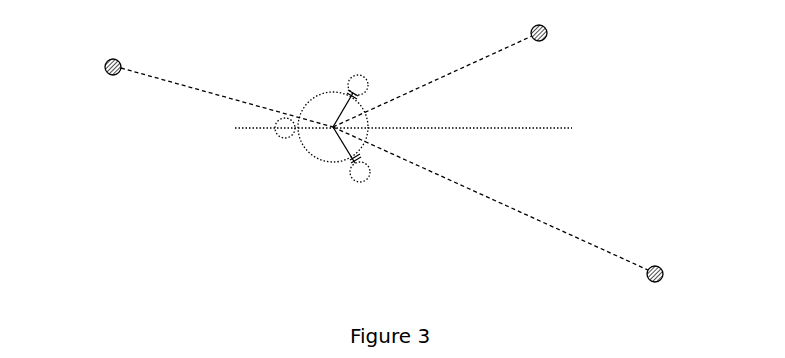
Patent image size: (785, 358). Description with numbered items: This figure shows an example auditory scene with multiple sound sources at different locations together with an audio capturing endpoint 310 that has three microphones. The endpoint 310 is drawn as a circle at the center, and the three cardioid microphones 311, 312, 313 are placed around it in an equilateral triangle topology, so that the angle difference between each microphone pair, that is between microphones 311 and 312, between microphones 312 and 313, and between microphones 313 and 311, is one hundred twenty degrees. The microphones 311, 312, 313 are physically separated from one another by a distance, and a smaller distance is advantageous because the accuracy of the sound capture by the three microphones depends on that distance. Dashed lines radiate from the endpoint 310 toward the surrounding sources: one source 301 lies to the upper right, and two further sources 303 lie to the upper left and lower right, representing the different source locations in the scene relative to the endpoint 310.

The target object position 301 is at (548, 36).
The interfering object positions 303 is at (105, 65).
The audio capturing endpoint 310 is at (320, 93).
The microphone 311 is at (366, 80).
The microphone 312 is at (276, 133).
The microphone 313 is at (362, 182).